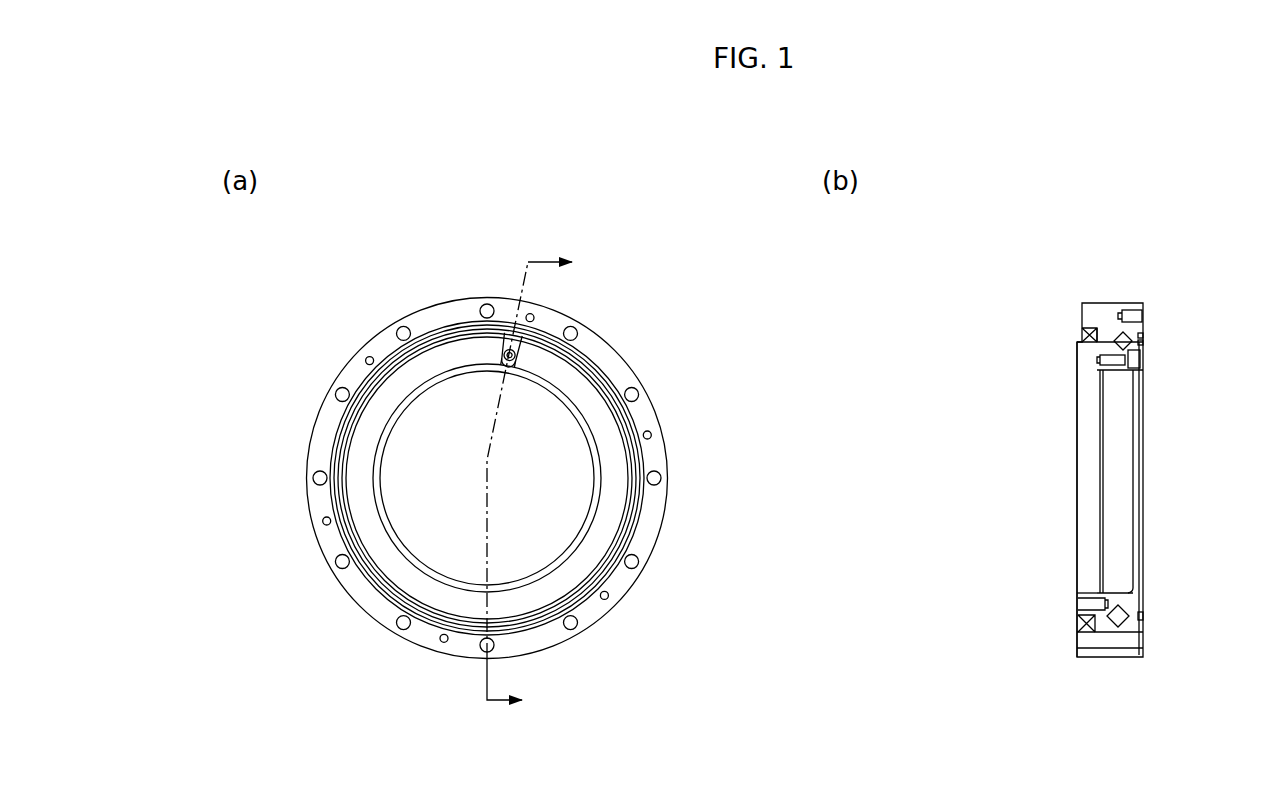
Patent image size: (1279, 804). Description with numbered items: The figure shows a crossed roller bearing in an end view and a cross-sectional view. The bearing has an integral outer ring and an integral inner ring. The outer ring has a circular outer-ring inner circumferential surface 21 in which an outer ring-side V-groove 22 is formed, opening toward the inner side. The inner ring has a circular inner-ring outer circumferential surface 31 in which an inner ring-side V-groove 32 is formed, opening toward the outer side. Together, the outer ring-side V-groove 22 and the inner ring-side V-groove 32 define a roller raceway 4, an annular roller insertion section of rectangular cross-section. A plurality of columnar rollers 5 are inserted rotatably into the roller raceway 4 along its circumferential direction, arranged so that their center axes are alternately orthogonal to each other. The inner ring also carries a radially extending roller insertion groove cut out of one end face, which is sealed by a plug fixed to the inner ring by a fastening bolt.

The roller raceway 4 is at (1108, 622).
The rollers 5 is at (1118, 628).
The outer-ring inner circumferential surface 21 is at (1085, 345).
The outer ring-side V-groove 22 is at (1100, 360).
The inner-ring outer circumferential surface 31 is at (1143, 620).
The inner ring-side V-groove 32 is at (1140, 650).